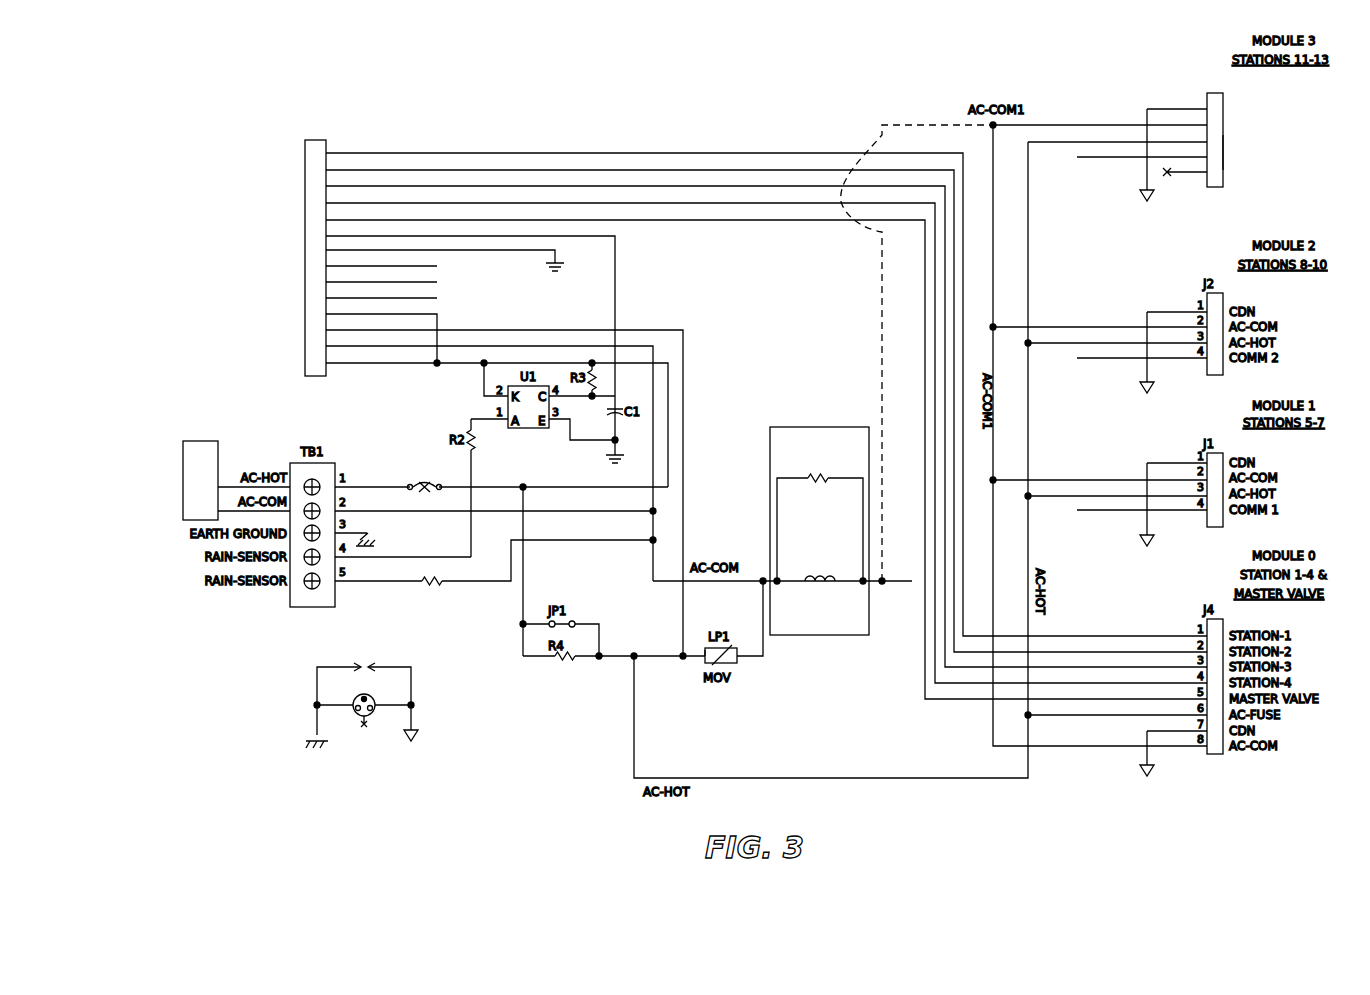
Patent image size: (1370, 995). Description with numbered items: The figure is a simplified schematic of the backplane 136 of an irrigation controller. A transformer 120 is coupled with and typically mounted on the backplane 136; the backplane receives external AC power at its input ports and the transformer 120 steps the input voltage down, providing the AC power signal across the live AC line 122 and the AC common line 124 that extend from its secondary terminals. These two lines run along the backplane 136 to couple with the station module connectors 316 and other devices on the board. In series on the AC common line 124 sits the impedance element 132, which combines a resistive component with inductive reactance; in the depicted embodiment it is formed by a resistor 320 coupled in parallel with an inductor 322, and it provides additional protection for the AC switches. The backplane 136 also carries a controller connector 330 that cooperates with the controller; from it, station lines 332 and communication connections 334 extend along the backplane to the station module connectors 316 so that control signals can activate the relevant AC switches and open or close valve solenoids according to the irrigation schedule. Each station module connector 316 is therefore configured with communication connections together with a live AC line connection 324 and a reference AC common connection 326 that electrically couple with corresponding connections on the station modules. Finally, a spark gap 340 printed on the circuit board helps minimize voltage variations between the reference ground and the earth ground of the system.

The backplane 136 is at (248, 78).
The controller connector 330 is at (305, 140).
The station lines 332 is at (386, 153).
The communication connections 334 is at (437, 262).
The transformer 120 is at (196, 441).
The live AC line 122 is at (378, 486).
The AC common line 124 is at (496, 511).
The impedance element 132 is at (812, 516).
The resistor 320 is at (808, 484).
The inductor 322 is at (810, 586).
The reference AC common connection 326 is at (1213, 125).
The live AC line connection 324 is at (1213, 140).
The station module connectors 316 is at (1215, 187).
The spark gap 340 is at (382, 753).